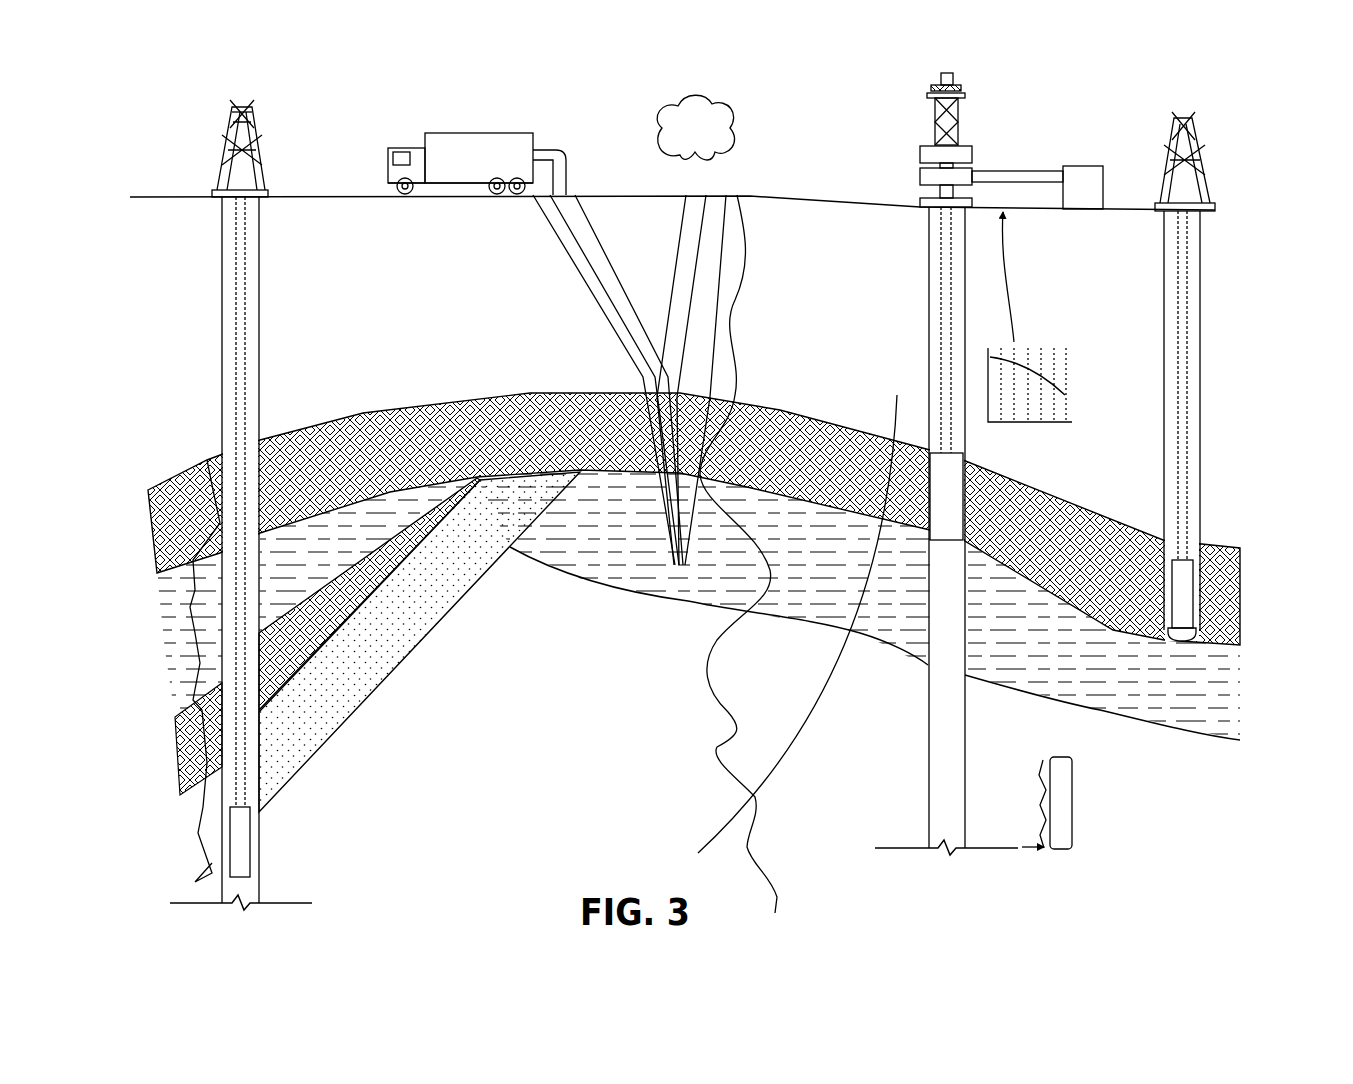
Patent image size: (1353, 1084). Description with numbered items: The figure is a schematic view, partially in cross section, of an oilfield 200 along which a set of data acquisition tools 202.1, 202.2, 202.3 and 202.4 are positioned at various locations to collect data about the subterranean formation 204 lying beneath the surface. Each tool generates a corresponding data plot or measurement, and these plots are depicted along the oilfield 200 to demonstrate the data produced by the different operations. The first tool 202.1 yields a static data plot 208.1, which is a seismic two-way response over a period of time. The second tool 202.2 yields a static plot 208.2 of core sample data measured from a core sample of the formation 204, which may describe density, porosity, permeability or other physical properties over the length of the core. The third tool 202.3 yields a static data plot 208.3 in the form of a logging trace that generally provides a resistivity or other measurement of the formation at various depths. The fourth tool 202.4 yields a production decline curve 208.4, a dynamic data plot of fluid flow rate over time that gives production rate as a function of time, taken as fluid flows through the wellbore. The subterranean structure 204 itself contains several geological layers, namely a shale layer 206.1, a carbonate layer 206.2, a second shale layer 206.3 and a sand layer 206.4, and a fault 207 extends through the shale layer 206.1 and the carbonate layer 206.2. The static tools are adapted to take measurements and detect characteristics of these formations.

The oilfield 200 is at (1145, 126).
The data acquisition tool 202.1 is at (454, 130).
The data acquisition tool 202.2 is at (1198, 601).
The data acquisition tool 202.3 is at (252, 848).
The data acquisition tool 202.4 is at (966, 517).
The subterranean formation 204 is at (875, 643).
The shale layer 206.1 is at (694, 594).
The carbonate layer 206.2 is at (698, 605).
The shale layer 206.3 is at (369, 594).
The sand layer 206.4 is at (419, 642).
The fault 207 is at (897, 395).
The static data plot 208.1 is at (729, 722).
The static plot 208.2 is at (1044, 765).
The static data plot 208.3 is at (200, 632).
The production decline curve 208.4 is at (1032, 424).